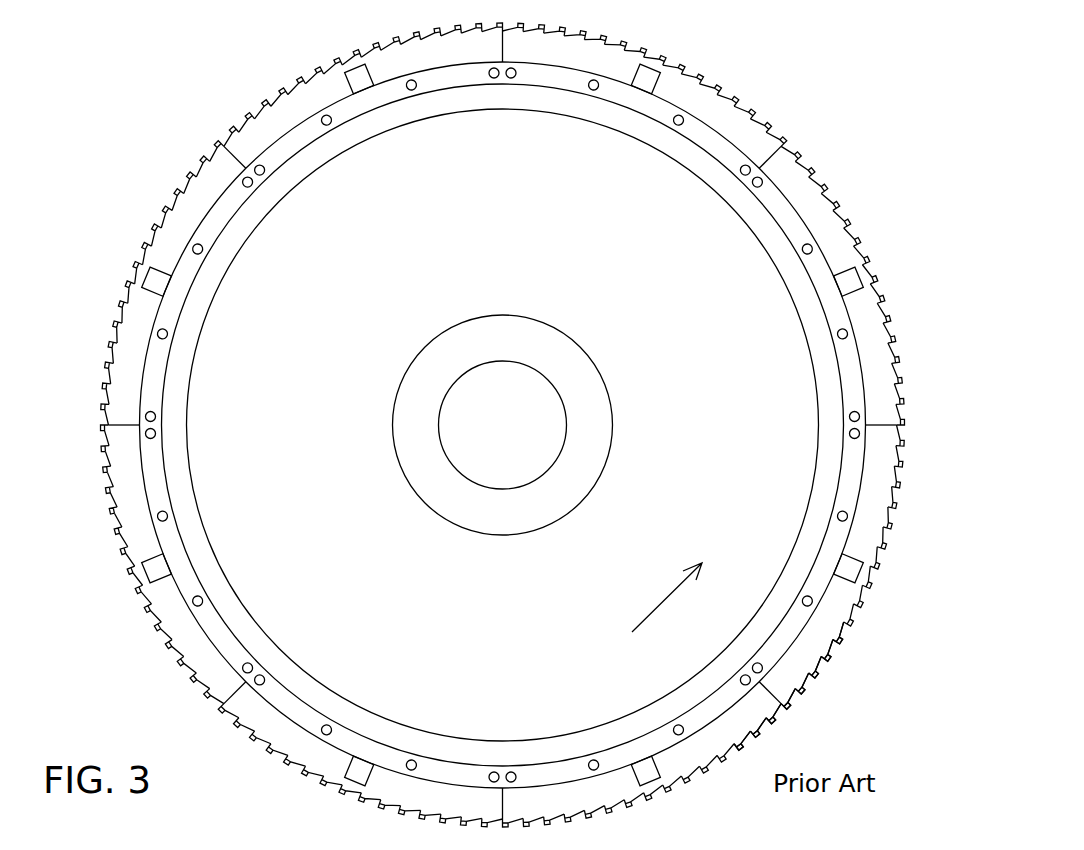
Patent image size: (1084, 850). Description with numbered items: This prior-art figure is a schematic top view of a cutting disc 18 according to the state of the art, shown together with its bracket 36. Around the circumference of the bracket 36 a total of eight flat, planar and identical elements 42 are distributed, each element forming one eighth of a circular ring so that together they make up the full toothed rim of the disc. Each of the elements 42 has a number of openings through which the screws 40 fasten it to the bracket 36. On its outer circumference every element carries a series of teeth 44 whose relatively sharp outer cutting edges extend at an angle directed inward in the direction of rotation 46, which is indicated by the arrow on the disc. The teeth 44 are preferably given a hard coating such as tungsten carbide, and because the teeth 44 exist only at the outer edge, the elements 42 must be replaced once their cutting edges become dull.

The cutting disc 18 is at (880, 352).
The bracket 36 is at (733, 261).
The screws 40 is at (838, 331).
The elements 42 is at (874, 507).
The teeth 44 is at (828, 655).
The direction of rotation 46 is at (655, 606).